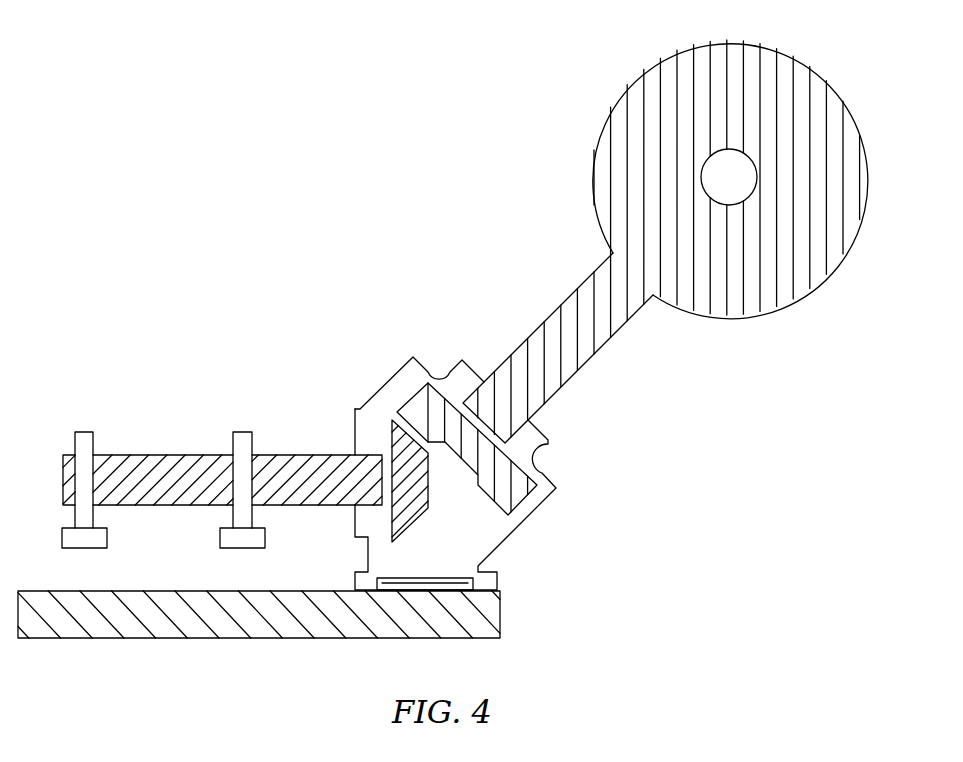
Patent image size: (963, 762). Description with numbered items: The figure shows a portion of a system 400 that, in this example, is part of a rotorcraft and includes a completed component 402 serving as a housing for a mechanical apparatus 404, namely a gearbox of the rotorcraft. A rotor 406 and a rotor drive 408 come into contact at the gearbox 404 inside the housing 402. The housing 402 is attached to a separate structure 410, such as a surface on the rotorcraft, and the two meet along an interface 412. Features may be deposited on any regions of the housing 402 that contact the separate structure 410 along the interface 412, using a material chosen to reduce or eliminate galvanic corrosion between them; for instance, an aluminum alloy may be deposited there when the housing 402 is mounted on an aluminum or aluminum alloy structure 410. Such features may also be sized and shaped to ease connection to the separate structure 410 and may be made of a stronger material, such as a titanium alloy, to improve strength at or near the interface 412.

The system 400 is at (386, 277).
The component 402 is at (519, 557).
The mechanical apparatus 404 is at (457, 520).
The rotor 406 is at (650, 337).
The rotor drive 408 is at (116, 430).
The separate structure 410 is at (330, 638).
The interface 412 is at (456, 588).